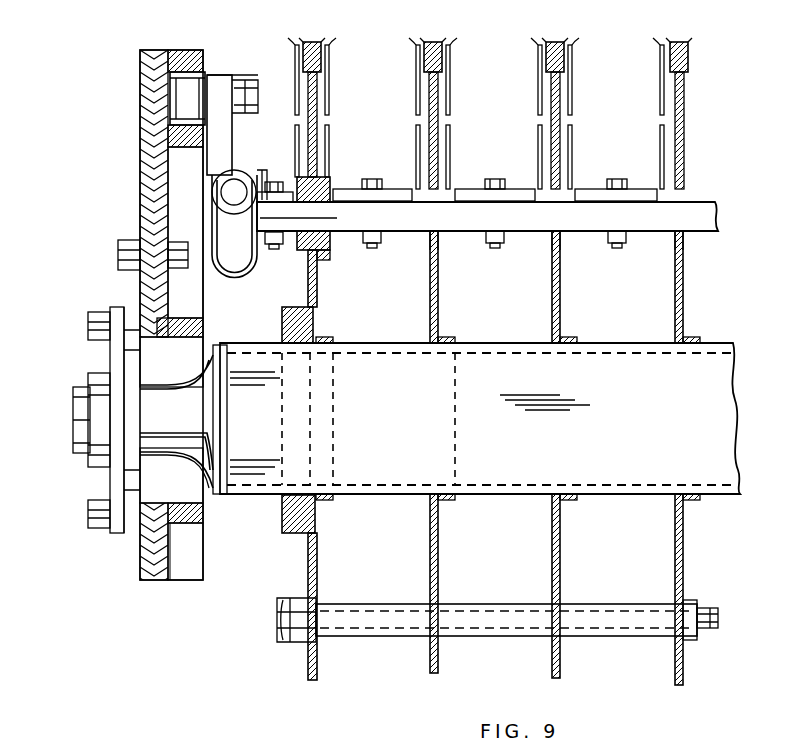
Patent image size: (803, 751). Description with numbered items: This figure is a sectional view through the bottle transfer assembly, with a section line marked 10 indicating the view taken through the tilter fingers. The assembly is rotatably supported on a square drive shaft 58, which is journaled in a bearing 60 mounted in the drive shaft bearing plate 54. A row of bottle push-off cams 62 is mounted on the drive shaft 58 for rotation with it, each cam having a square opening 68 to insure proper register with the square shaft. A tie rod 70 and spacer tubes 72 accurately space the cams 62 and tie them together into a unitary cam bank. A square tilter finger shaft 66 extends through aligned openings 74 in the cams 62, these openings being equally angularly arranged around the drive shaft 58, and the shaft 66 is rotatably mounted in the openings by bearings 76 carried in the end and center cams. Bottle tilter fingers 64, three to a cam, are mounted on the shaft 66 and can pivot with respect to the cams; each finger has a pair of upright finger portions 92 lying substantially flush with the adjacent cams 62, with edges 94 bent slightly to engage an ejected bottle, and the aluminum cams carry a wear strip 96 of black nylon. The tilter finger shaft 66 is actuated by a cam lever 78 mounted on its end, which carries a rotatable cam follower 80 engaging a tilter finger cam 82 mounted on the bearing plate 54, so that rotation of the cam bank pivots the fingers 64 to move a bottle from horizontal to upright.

The section line 10- 10 is at (567, 4).
The drive shaft bearing plate 54 is at (140, 566).
The square drive shaft 58 is at (628, 446).
The bearing 60 is at (100, 378).
The bottle push-off cam 62 is at (427, 291).
The bottle tilter finger 64 is at (342, 187).
The tilter finger shaft 66 is at (700, 205).
The square opening 68 is at (686, 345).
The tie rod 70 is at (711, 610).
The spacer tube 72 is at (381, 640).
The aligned opening 74 is at (428, 240).
The bearing 76 is at (296, 246).
The cam lever 78 is at (222, 73).
The cam follower 80 is at (183, 96).
The tilter finger cam 82 is at (183, 572).
The upright finger portion 92 is at (294, 128).
The edge 94 is at (294, 42).
The wear strip 96 is at (312, 41).